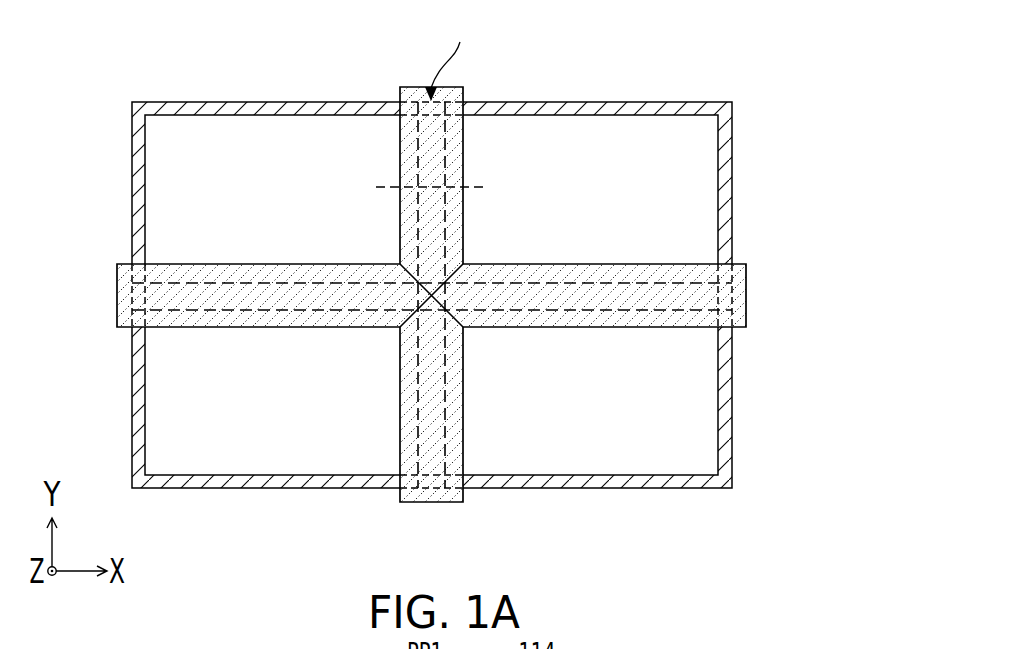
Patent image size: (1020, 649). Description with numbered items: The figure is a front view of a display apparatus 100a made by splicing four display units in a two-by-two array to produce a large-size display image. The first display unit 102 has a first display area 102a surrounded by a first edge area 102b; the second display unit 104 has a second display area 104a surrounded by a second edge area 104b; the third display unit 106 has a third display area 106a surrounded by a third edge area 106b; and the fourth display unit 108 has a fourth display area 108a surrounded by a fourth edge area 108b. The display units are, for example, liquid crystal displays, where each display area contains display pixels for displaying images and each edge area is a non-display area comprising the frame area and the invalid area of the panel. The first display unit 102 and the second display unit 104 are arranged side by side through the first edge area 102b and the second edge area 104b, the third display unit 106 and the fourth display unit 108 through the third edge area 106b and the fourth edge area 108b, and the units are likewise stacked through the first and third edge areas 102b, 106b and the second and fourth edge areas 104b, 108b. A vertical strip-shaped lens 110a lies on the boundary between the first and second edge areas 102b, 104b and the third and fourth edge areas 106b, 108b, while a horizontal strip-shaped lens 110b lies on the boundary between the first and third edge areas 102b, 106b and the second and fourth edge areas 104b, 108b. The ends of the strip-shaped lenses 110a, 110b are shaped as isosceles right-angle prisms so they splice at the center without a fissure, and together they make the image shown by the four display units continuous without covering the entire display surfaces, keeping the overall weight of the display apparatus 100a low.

The display apparatus 100a is at (758, 582).
The first display unit 102 is at (202, 37).
The first display area 102a is at (285, 135).
The first edge area 102b is at (228, 120).
The second display unit 104 is at (665, 38).
The second display area 104a is at (640, 135).
The second edge area 104b is at (583, 113).
The third display unit 106 is at (202, 554).
The third display area 106a is at (283, 455).
The third edge area 106b is at (228, 482).
The fourth display unit 108 is at (665, 553).
The fourth display area 108a is at (640, 455).
The fourth edge area 108b is at (583, 482).
The strip-shaped lens 110a is at (405, 140).
The strip-shaped lens 110b is at (172, 317).